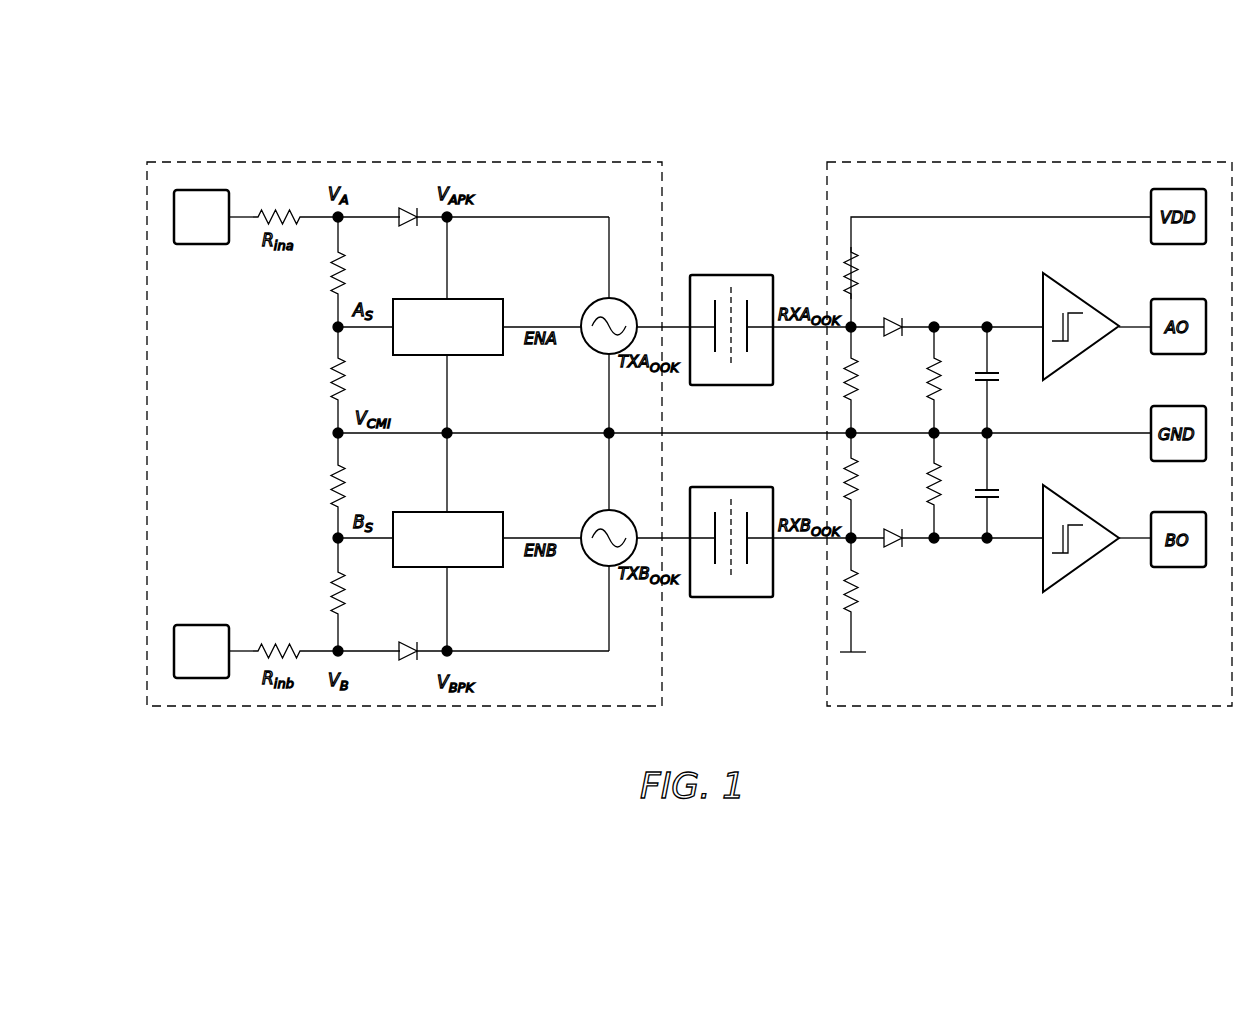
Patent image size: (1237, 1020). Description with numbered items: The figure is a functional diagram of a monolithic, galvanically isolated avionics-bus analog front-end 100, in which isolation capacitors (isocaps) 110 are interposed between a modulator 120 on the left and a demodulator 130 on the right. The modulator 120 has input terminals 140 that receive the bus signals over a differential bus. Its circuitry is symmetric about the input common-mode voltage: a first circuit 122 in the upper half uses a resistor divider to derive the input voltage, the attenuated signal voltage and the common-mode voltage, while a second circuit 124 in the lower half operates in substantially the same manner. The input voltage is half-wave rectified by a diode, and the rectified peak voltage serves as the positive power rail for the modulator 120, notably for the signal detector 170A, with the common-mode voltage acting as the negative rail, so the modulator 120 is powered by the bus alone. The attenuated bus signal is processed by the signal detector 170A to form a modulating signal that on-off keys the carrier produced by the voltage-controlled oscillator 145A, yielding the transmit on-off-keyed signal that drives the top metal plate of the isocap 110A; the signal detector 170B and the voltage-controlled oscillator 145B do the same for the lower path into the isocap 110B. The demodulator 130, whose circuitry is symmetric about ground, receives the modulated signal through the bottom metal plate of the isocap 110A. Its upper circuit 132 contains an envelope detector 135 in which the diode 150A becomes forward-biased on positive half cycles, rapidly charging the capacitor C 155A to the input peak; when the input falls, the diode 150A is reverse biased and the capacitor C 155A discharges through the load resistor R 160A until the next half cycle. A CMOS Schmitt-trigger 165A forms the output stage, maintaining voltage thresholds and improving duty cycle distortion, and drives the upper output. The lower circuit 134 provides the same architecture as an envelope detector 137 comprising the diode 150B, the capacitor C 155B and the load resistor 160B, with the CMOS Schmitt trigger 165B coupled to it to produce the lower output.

The ARINC 429 analog front-end 100 is at (1118, 104).
The isolation capacitors 110 is at (732, 453).
The isocap 110A is at (752, 275).
The isocap 110B is at (750, 487).
The modulator 120 is at (597, 160).
The first circuit 122 is at (296, 287).
The second circuit 124 is at (292, 532).
The demodulator 130 is at (884, 160).
The upper circuit 132 is at (1082, 409).
The lower circuit 134 is at (1082, 470).
The envelope detector 135 is at (948, 286).
The envelope detector 137 is at (964, 601).
The input terminals 140 is at (202, 190).
The voltage-controlled oscillator 145A is at (620, 300).
The voltage-controlled oscillator 145B is at (618, 511).
The diode 150A is at (893, 321).
The diode 150B is at (891, 548).
The capacitor C 155A is at (990, 385).
The capacitor C 155B is at (996, 489).
The load resistor R 160A is at (943, 378).
The load resistor 160B is at (942, 484).
The CMOS Schmitt-trigger 165A is at (1077, 300).
The CMOS Schmitt trigger 165B is at (1077, 512).
The signal detector 170A is at (475, 299).
The signal detector 170B is at (475, 512).